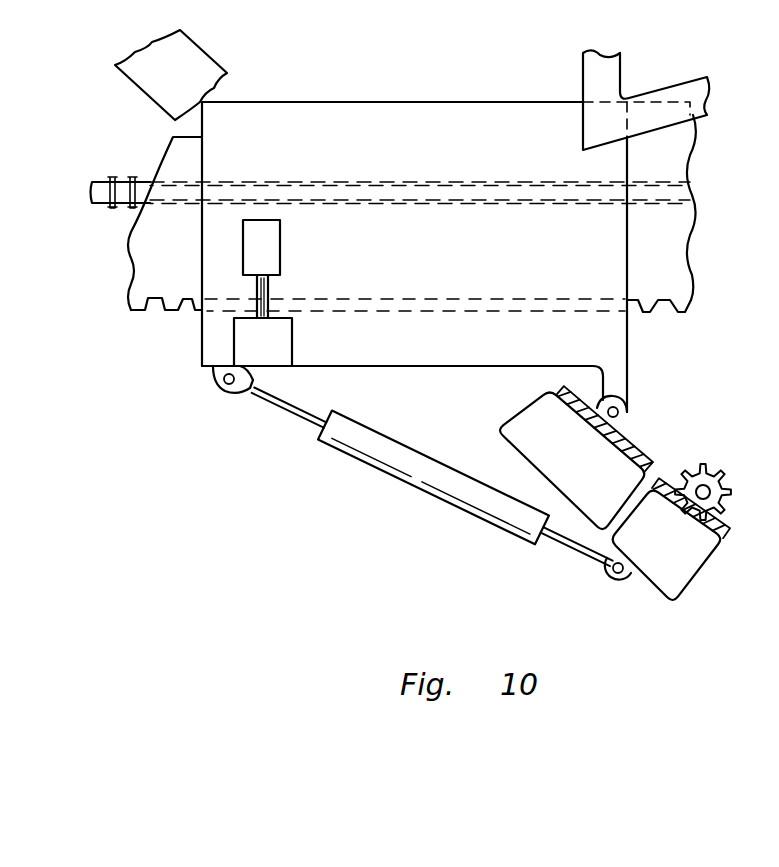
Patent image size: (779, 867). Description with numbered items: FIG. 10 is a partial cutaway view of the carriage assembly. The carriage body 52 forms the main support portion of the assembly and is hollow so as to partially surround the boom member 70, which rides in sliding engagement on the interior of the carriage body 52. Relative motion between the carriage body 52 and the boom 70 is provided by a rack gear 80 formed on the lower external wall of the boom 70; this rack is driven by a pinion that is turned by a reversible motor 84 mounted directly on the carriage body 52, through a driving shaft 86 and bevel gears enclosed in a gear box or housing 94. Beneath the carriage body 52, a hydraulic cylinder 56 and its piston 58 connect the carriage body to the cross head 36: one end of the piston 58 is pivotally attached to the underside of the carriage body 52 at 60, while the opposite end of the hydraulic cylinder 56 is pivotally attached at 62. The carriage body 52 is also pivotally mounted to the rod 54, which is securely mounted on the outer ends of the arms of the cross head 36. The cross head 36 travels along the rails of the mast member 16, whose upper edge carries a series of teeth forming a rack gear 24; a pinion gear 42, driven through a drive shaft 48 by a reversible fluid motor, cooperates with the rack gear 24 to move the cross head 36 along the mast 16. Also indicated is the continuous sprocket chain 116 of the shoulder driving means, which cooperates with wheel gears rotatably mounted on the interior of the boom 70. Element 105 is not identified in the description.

The mast member 16 is at (716, 580).
The rack gear 24 is at (716, 531).
The cross head 36 is at (628, 447).
The pinion gear 42 is at (697, 470).
The drive shaft 48 is at (709, 486).
The carriage body 52 is at (368, 102).
The rod 54 is at (622, 405).
The hydraulic cylinder 56 is at (437, 504).
The piston 58 is at (284, 419).
The pivotal attachment point 60 is at (221, 384).
The pivotal attachment point 62 is at (617, 575).
The boom member 70 is at (130, 254).
The rack gear 80 is at (139, 310).
The reversible motor 84 is at (281, 244).
The driving shaft 86 is at (272, 287).
The gear box or housing 94 is at (293, 334).
The bracket plate 105 is at (583, 68).
The continuous sprocket chain 116 is at (99, 182).